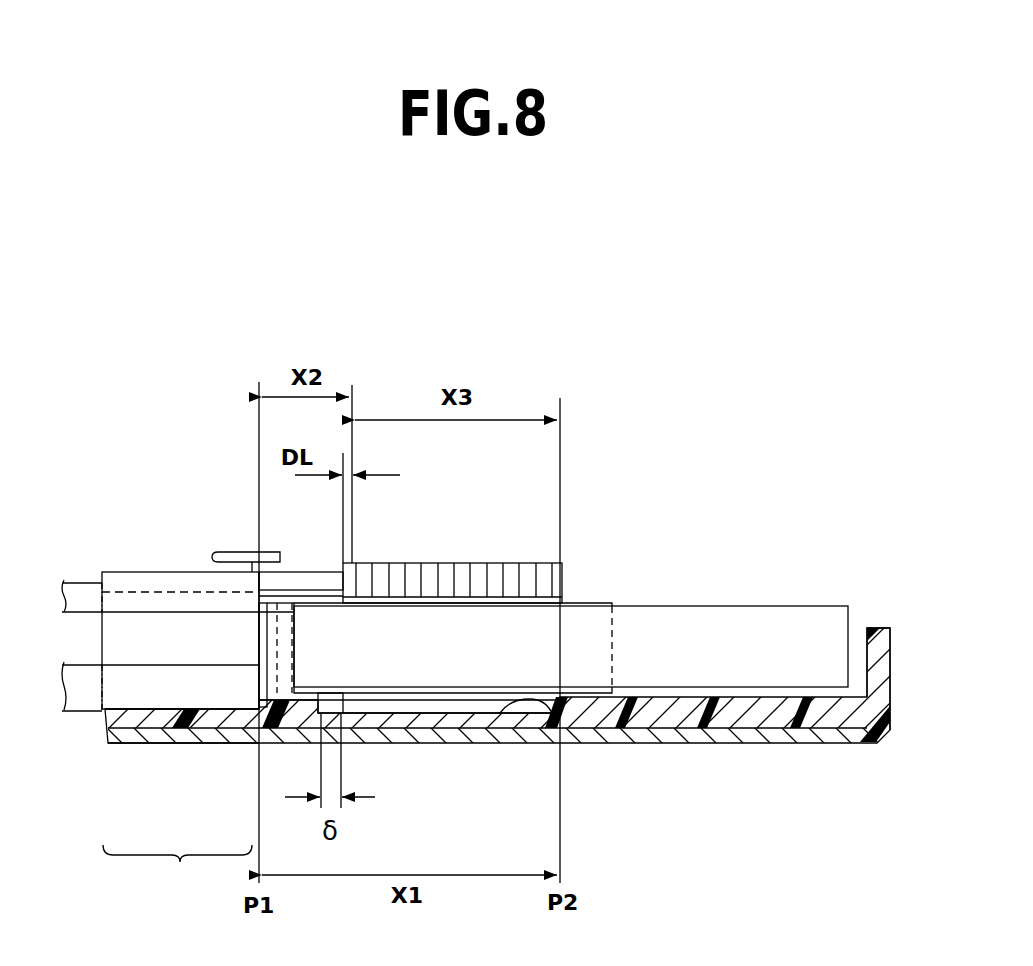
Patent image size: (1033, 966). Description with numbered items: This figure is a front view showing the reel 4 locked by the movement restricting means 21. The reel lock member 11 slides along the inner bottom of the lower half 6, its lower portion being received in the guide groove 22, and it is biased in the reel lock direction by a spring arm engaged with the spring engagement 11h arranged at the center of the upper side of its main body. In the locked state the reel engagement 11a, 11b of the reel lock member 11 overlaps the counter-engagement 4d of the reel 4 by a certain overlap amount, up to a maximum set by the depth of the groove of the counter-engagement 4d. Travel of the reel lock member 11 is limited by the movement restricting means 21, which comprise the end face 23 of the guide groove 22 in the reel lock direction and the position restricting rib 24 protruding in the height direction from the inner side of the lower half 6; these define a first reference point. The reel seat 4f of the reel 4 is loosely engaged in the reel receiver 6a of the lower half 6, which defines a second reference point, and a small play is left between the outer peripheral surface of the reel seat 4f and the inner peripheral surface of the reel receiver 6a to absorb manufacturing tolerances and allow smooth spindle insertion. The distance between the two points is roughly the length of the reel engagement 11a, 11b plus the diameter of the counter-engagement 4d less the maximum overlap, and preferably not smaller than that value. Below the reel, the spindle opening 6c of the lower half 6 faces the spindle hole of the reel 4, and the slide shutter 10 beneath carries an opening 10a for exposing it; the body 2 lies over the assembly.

The lens barrel body 2 is at (778, 622).
The reel 4 is at (593, 583).
The counter-engagement 4d is at (563, 563).
The reel seat 4f is at (470, 700).
The lower half 6 is at (882, 622).
The reel receiver 6a is at (500, 700).
The spindle opening 6c is at (533, 712).
The slide shutter 10 is at (729, 752).
The opening 10a is at (528, 720).
The reel lock member 11 is at (137, 568).
The reel engagement 11a is at (317, 573).
The reel engagement 11b is at (256, 495).
The spring engagement 11h is at (232, 552).
The movement restricting means 21 is at (177, 872).
The guide groove 22 is at (140, 728).
The end face 23 is at (215, 715).
The position restricting rib 24 is at (197, 727).